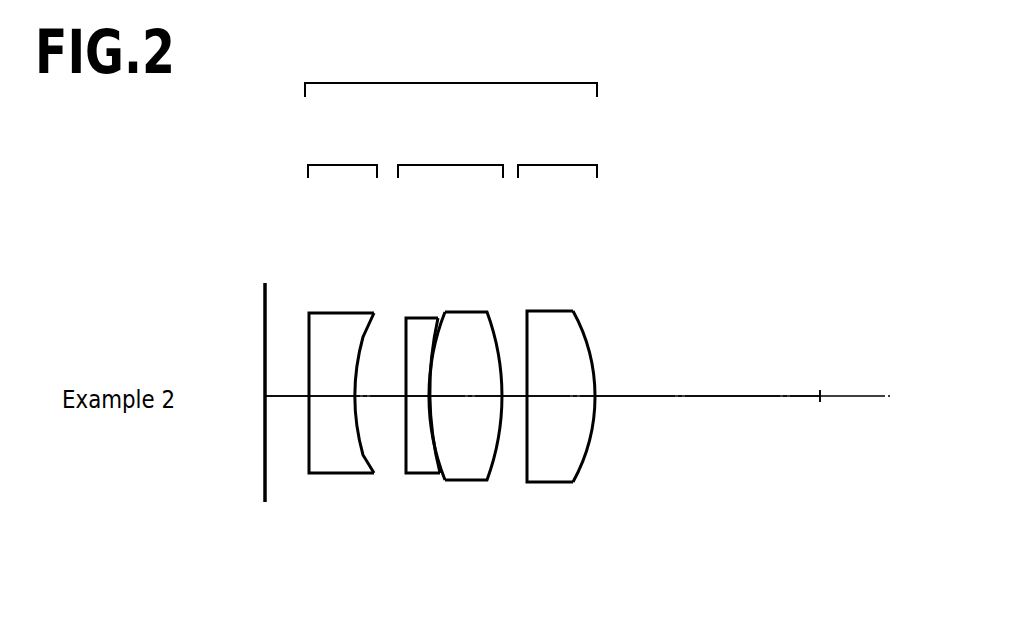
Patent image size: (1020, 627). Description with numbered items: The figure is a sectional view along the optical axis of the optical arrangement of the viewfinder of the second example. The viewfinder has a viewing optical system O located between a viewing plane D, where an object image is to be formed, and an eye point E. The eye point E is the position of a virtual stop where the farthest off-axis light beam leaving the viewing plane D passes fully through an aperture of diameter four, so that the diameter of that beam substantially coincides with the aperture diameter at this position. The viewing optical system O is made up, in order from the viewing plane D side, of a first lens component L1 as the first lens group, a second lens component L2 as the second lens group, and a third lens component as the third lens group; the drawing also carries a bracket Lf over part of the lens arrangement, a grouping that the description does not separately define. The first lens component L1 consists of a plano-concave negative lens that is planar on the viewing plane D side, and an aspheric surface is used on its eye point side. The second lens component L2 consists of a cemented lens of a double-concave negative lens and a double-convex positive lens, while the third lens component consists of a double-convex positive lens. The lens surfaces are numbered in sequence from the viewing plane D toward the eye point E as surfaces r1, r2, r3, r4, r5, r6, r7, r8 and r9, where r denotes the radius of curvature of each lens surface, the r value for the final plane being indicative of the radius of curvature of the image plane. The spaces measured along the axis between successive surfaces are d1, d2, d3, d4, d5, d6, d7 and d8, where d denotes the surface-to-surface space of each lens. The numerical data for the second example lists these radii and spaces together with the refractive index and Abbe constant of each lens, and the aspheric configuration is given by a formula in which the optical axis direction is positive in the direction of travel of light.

The viewing optical system O is at (451, 74).
The front lens group Lf is at (342, 157).
The first lens component L1 is at (450, 157).
The second lens component L2 is at (557, 157).
The viewing plane D is at (264, 487).
The eye point E is at (821, 436).
The radius of curvature of first surface r1 is at (263, 303).
The radius of curvature of second surface r2 is at (308, 335).
The radius of curvature of third surface r3 is at (357, 347).
The radius of curvature of fourth surface r4 is at (405, 350).
The radius of curvature of fifth surface r5 is at (430, 342).
The radius of curvature of sixth surface r6 is at (498, 340).
The radius of curvature of seventh surface r7 is at (521, 343).
The radius of curvature of eighth surface r8 is at (590, 340).
The radius of curvature of ninth surface r9 is at (821, 358).
The first surface-to-surface space d1 is at (287, 410).
The second surface-to-surface space d2 is at (332, 410).
The third surface-to-surface space d3 is at (380, 410).
The fourth surface-to-surface space d4 is at (418, 398).
The fifth surface-to-surface space d5 is at (466, 410).
The sixth surface-to-surface space d6 is at (510, 398).
The seventh surface-to-surface space d7 is at (561, 410).
The eighth surface-to-surface space d8 is at (707, 412).